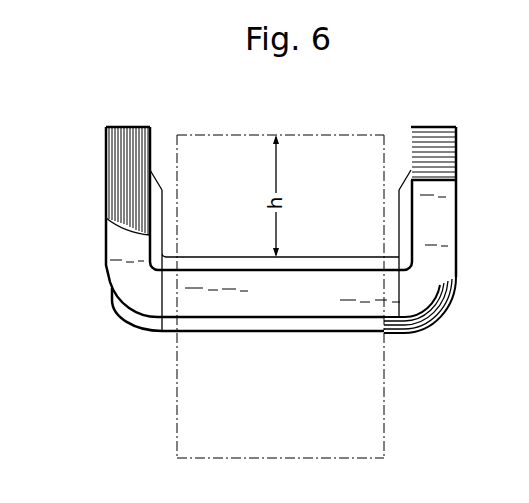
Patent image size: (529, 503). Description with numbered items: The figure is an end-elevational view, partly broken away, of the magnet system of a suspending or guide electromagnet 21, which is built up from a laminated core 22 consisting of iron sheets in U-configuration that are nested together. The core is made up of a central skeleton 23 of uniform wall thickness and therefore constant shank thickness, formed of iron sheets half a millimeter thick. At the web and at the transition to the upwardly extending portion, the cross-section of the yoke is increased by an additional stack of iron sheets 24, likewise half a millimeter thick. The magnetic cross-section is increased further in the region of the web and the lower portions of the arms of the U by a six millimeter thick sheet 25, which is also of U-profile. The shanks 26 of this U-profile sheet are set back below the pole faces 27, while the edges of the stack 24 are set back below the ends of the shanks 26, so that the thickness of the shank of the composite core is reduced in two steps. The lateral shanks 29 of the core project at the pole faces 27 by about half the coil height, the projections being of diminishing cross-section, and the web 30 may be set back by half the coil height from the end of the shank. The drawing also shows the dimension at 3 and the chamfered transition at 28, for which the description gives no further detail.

The phantom block 3 is at (277, 446).
The suspending or guide electromagnet 21 is at (167, 420).
The laminated core 22 is at (97, 271).
The central skeleton 23 is at (115, 202).
The additional stack of iron sheets 24 is at (432, 322).
The U-profile sheet 25 is at (262, 270).
The shanks 26 is at (163, 214).
The pole faces 27 is at (125, 127).
The chamfer 28 is at (160, 174).
The lateral shanks 29 is at (116, 143).
The web 30 is at (322, 310).